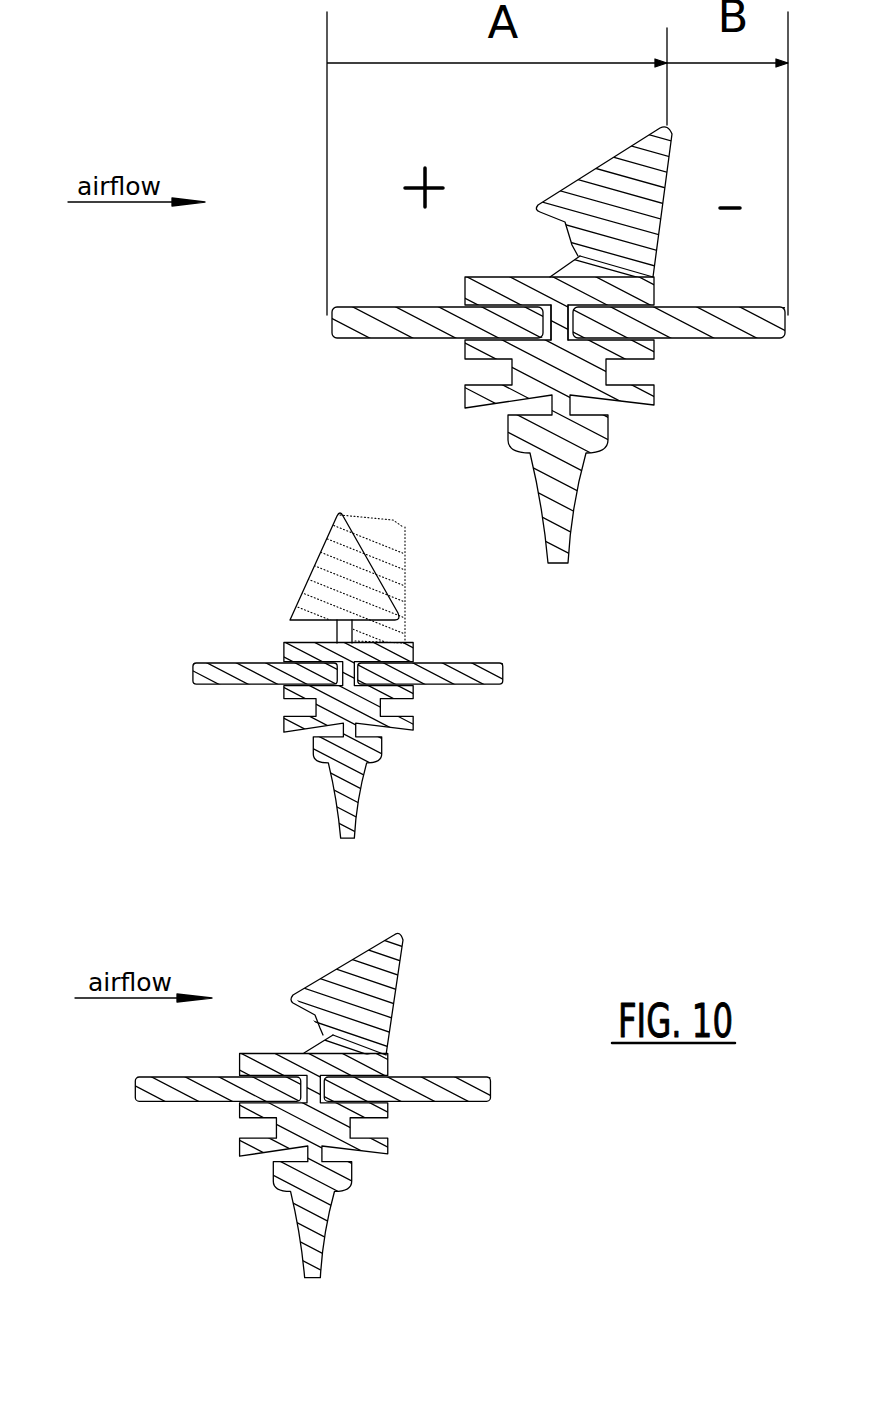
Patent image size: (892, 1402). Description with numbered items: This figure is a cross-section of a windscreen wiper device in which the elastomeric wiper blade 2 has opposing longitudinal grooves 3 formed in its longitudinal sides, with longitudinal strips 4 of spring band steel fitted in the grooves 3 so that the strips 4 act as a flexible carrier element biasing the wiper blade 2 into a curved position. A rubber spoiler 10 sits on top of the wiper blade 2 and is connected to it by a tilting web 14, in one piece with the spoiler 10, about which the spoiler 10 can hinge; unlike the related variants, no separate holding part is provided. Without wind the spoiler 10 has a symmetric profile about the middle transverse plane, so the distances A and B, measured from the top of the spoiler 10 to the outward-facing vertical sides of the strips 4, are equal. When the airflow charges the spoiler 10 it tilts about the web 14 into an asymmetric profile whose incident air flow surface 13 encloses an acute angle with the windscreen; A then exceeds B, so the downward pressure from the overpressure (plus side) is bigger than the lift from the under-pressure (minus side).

The wiper blade 2 is at (568, 453).
The longitudinal grooves 3 is at (540, 340).
The longitudinal strips 4 is at (382, 330).
The spoiler 10 is at (653, 181).
The incident air flow surface 13 is at (377, 533).
The tilting web 14 is at (578, 259).